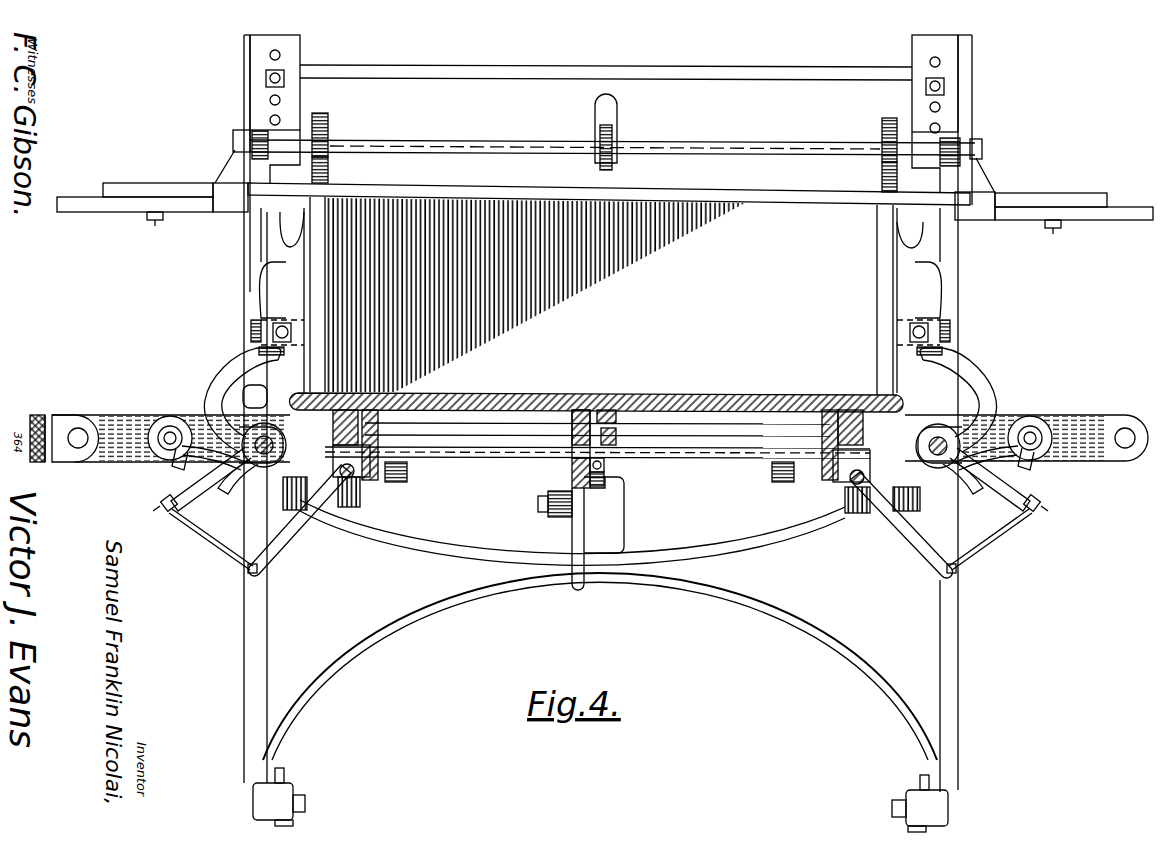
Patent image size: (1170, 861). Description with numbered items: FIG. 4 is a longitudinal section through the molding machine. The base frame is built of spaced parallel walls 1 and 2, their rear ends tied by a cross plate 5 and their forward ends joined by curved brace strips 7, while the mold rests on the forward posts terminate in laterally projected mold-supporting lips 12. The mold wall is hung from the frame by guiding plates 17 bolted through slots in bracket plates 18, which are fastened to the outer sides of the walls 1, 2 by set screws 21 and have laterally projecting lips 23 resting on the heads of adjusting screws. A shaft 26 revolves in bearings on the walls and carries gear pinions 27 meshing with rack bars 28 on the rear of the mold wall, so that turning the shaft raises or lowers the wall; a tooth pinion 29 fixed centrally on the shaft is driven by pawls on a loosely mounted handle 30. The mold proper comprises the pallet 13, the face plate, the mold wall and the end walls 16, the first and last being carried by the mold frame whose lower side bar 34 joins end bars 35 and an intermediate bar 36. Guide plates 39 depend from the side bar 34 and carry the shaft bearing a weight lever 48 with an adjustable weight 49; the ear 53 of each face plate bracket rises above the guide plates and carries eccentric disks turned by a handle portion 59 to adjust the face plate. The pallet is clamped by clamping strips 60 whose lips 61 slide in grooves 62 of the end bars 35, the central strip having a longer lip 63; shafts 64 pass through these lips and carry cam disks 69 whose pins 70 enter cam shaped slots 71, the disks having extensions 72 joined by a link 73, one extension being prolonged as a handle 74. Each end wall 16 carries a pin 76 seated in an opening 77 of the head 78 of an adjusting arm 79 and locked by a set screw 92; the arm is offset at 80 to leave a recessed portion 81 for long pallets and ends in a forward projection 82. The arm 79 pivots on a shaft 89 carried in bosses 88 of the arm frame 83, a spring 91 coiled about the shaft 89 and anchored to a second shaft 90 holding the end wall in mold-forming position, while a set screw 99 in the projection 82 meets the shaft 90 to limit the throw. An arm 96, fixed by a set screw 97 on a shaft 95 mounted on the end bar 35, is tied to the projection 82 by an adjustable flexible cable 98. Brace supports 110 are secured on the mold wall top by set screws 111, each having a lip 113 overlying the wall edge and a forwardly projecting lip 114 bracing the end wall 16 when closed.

The wall 1 is at (255, 266).
The wall 2 is at (955, 287).
The cross plate 5 is at (592, 66).
The curved brace strips 7 is at (735, 546).
The mold-supporting lips 12 is at (290, 800).
The pallet 13 is at (487, 399).
The end walls 16 is at (285, 352).
The guiding plates 17 is at (237, 155).
The bracket plate 18 is at (243, 79).
The set screws 21 is at (236, 136).
The laterally projecting lips 23 is at (290, 52).
The shaft 26 is at (612, 134).
The gear pinions 27 is at (328, 120).
The rack bars 28 is at (328, 178).
The tooth pinion 29 is at (613, 165).
The handle 30 is at (612, 105).
The side bar 34 is at (722, 446).
The end bars 35 is at (335, 420).
The intermediate bar 36 is at (655, 411).
The guide plates 39 is at (407, 476).
The weight lever 48 is at (620, 500).
The adjustable weight 49 is at (622, 540).
The ear 53 is at (305, 512).
The handle portion 59 is at (338, 506).
The clamping strip 60 is at (378, 410).
The forwardly projecting lips 61 is at (352, 412).
The grooves 62 is at (622, 432).
The lip 63 is at (604, 410).
The shafts 64 is at (493, 460).
The cam disks 69 is at (568, 432).
The pins 70 is at (606, 478).
The cam shaped slots 71 is at (606, 492).
The extensions 72 is at (571, 483).
The link 73 is at (547, 504).
The handle 74 is at (572, 538).
The pin 76 is at (262, 325).
The opening 77 is at (304, 340).
The head 78 is at (262, 290).
The adjusting arm 79 is at (228, 376).
The offset 80 is at (208, 404).
The recessed portion 81 is at (250, 394).
The forward projection 82 is at (172, 510).
The arm 83 is at (112, 463).
The bosses 88 is at (160, 450).
The shaft 89 is at (257, 436).
The shaft 90 is at (1038, 460).
The spring 91 is at (238, 488).
The set screw 92 is at (258, 332).
The shaft 95 is at (352, 474).
The arm 96 is at (298, 538).
The set screw 97 is at (348, 480).
The flexible cable 98 is at (238, 548).
The set screw 99 is at (172, 455).
The brace supports 110 is at (195, 212).
The set screws 111 is at (150, 224).
The lip 113 is at (222, 192).
The forwardly projecting lip 114 is at (300, 236).